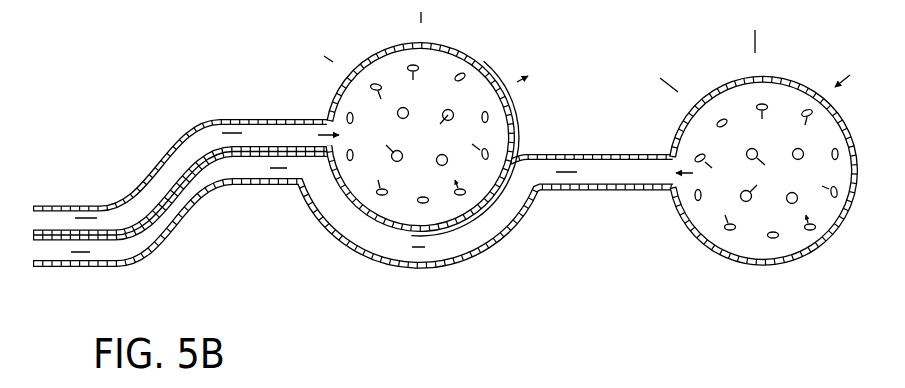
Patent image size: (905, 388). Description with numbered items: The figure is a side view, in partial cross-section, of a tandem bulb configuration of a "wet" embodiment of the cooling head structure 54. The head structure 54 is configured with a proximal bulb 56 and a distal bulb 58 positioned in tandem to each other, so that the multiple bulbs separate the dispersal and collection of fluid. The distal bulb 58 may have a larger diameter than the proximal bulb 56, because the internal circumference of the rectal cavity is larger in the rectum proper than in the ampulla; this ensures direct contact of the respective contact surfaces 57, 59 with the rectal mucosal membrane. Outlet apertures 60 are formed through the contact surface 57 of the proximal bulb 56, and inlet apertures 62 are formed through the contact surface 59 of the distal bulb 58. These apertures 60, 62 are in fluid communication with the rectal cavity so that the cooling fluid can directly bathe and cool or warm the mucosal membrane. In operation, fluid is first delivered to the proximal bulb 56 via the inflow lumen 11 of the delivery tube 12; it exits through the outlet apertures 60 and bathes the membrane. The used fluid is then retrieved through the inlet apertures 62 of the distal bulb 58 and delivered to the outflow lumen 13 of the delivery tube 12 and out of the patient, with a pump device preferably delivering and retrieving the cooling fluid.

The inflow lumen 11 is at (113, 209).
The delivery tube 12 is at (349, 196).
The outflow lumen 13 is at (167, 224).
The cooling head structure 54 is at (571, 173).
The proximal bulb 56 is at (419, 124).
The contact surface of the proximal bulb 57 is at (515, 110).
The distal bulb 58 is at (753, 160).
The contact surface of the distal bulb 59 is at (838, 231).
The outlet apertures 60 is at (403, 107).
The inlet apertures 62 is at (736, 184).